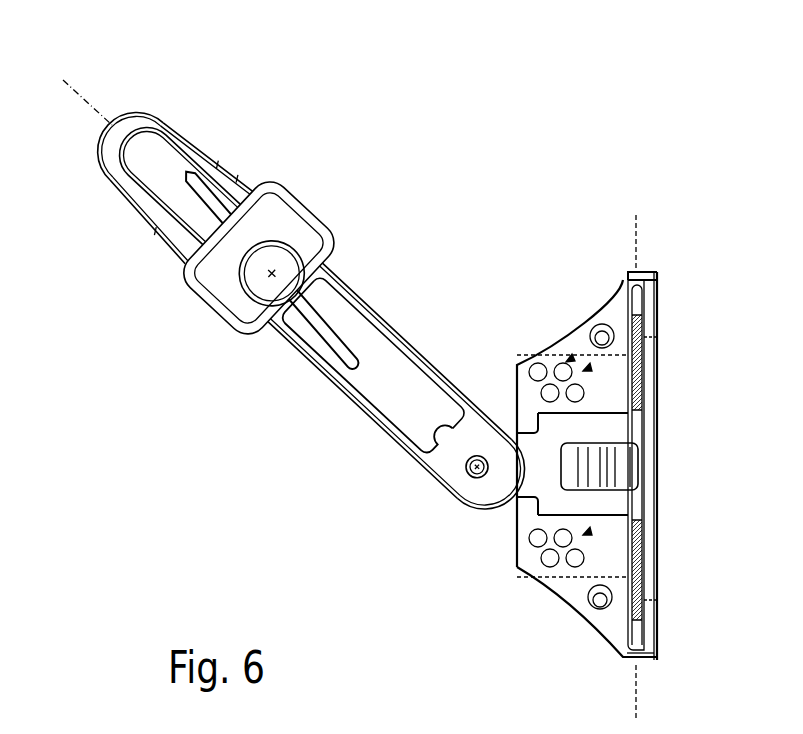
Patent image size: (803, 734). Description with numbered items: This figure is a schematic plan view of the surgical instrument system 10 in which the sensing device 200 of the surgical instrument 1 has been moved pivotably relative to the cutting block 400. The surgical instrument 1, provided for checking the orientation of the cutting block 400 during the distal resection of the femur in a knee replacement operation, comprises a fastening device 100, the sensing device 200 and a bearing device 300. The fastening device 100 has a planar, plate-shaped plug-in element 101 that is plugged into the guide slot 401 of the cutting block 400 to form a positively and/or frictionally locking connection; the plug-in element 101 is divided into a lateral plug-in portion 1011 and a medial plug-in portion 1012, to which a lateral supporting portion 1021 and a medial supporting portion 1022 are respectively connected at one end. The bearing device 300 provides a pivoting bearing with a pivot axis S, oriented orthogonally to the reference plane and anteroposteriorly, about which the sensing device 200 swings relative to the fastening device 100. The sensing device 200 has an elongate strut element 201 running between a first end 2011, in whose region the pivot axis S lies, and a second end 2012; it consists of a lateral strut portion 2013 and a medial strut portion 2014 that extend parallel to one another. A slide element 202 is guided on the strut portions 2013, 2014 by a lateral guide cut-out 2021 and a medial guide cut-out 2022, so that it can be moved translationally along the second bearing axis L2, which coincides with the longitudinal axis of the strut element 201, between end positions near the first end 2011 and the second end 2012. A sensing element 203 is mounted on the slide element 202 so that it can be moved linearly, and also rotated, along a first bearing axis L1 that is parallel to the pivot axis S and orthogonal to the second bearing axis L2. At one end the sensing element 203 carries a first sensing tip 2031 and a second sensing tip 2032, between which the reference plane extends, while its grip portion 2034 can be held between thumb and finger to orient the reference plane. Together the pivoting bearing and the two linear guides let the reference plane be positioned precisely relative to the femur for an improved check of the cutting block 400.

The device 10 is at (528, 100).
The surgical instrument 1 is at (540, 192).
The fastening device 100 is at (602, 362).
The plug-in element 101 is at (623, 650).
The lateral plug-in portion 1011 is at (632, 577).
The medial plug-in portion 1012 is at (642, 382).
The lateral supporting portion 1021 is at (623, 508).
The medial supporting portion 1022 is at (622, 426).
The sensing device 200 is at (366, 225).
The strut element 201 is at (350, 462).
The first end 2011 is at (487, 492).
The second end 2012 is at (139, 121).
The lateral strut portion 2013 is at (358, 405).
The medial strut portion 2014 is at (414, 343).
The slide element 202 is at (187, 287).
The lateral guide cut-out 2021 is at (170, 262).
The medial guide cut-out 2022 is at (243, 166).
The sensing element 203 is at (272, 225).
The first sensing tip 2031 is at (190, 178).
The second sensing tip 2032 is at (347, 380).
The grip portion 2034 is at (288, 246).
The bearing device 300 is at (418, 243).
The cutting block 400 is at (577, 587).
The guide slot 401 is at (636, 303).
The pivot axis S is at (470, 478).
The first bearing axis L1 is at (271, 273).
The second bearing axis L2 is at (95, 108).